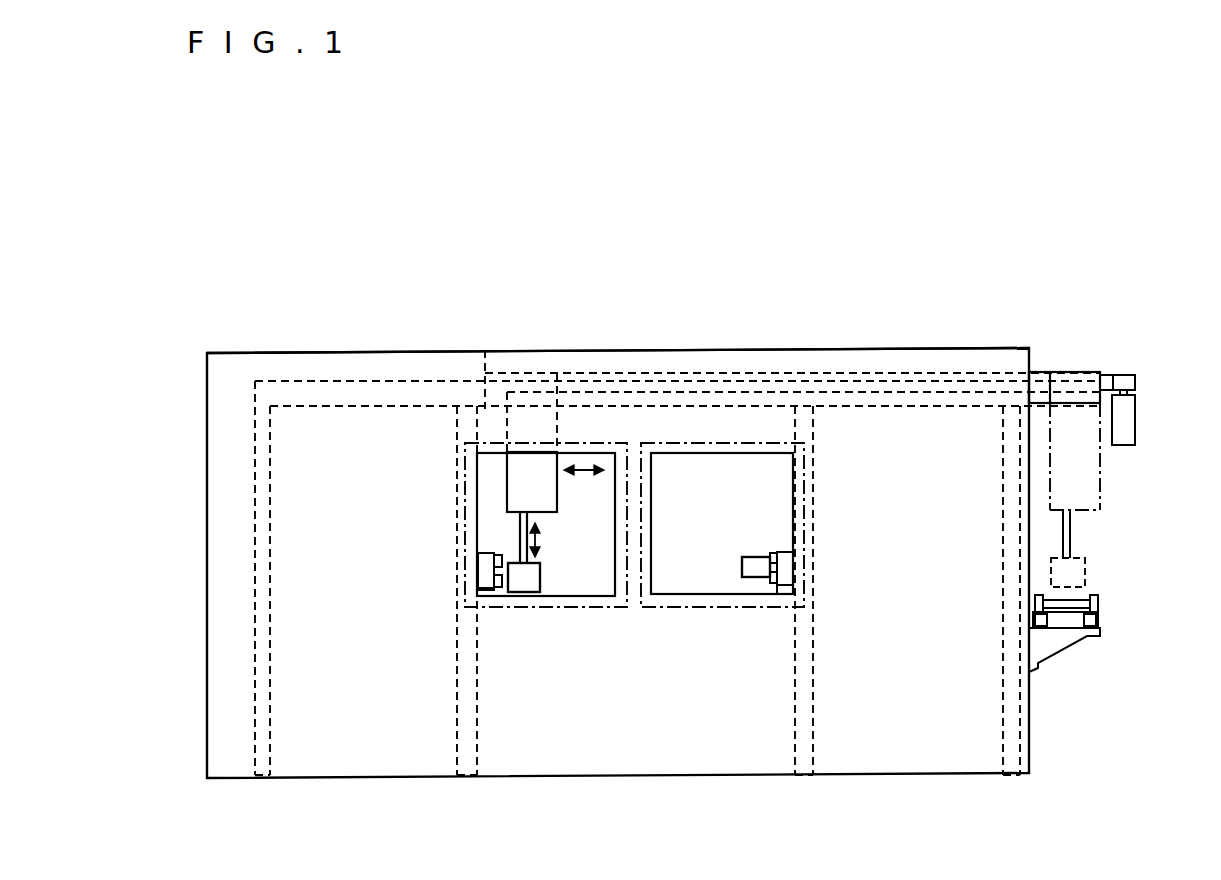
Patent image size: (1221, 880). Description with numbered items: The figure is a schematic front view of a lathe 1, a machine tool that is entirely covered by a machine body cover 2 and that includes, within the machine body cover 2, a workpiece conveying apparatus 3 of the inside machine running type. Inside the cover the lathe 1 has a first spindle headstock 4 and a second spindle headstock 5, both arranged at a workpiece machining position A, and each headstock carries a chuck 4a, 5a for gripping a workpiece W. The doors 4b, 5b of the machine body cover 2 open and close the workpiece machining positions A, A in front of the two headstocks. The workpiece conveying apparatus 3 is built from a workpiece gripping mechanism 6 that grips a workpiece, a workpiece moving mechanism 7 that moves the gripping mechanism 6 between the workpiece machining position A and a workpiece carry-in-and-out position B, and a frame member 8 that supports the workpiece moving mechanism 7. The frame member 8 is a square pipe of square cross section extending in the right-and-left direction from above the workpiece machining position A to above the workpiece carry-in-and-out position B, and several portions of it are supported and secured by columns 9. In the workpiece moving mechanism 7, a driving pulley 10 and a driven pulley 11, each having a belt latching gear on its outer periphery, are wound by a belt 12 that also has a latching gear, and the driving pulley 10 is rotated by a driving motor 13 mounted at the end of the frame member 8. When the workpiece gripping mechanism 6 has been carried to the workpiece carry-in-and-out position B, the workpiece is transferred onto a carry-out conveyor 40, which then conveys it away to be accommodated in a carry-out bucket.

The lathe 1 is at (647, 338).
The machine body cover 2 is at (810, 348).
The workpiece conveying apparatus 3 is at (920, 358).
The first spindle headstock 4 is at (488, 596).
The chuck 4a is at (502, 553).
The door 4b is at (609, 608).
The second spindle headstock 5 is at (786, 590).
The chuck 5a is at (770, 555).
The door 5b is at (673, 608).
The workpiece gripping mechanism 6 is at (564, 511).
The workpiece moving mechanism 7 is at (965, 378).
The frame member 8 is at (855, 372).
The columns 9 is at (272, 748).
The driving pulley 10 is at (1137, 380).
The driven pulley 11 is at (485, 375).
The belt 12 is at (715, 374).
The driving motor 13 is at (1137, 428).
The carry-out conveyor 40 is at (1099, 602).
The workpiece machining position A is at (545, 585).
The workpiece carry-in-and-out position B is at (1087, 563).
The workpiece W is at (742, 566).